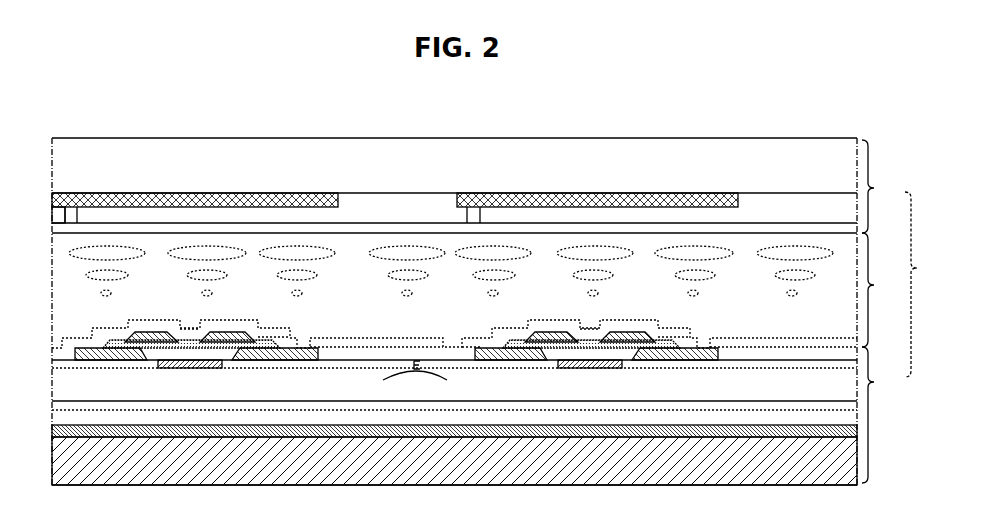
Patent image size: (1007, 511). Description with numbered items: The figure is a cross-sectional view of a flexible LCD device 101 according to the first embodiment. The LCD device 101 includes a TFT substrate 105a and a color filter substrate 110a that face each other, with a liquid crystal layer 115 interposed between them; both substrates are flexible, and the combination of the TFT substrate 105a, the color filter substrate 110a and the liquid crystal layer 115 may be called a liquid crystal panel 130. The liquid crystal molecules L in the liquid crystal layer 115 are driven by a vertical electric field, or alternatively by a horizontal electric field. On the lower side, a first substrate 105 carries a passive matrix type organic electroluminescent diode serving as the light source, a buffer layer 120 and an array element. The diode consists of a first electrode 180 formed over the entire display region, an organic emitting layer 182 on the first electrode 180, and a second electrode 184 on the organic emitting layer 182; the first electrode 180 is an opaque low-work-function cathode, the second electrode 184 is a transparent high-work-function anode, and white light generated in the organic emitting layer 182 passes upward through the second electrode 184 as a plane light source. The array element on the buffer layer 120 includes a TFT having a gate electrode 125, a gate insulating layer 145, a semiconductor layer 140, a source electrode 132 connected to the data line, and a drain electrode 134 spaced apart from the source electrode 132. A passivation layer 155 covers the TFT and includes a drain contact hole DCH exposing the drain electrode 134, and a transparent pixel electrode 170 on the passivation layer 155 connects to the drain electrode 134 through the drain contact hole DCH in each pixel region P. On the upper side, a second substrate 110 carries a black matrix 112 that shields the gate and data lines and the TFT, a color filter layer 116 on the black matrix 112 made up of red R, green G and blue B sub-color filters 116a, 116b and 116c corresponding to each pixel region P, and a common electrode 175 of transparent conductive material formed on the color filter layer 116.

The LCD device 101 is at (815, 111).
The first substrate 105 is at (843, 461).
The TFT substrate 105a is at (884, 415).
The second substrate 110 is at (853, 161).
The color filter substrate 110a is at (884, 186).
The black matrix 112 is at (283, 193).
The liquid crystal layer 115 is at (484, 290).
The color filter layer 116 is at (404, 104).
The red sub-color filter 116a is at (150, 215).
The green sub-color filter 116b is at (427, 207).
The blue sub-color filter 116c is at (760, 205).
The buffer layer 120 is at (465, 387).
The gate electrode 125 is at (185, 368).
The liquid crystal panel 130 is at (924, 284).
The source electrode 132 is at (150, 332).
The drain electrode 134 is at (225, 332).
The semiconductor layer 140 is at (190, 340).
The gate insulating layer 145 is at (380, 360).
The passivation layer 155 is at (355, 350).
The pixel electrode 170 is at (335, 338).
The common electrode 175 is at (360, 233).
The first electrode 180 is at (396, 410).
The organic emitting layer 182 is at (414, 410).
The second electrode 184 is at (436, 404).
The red R is at (58, 215).
The green G is at (387, 213).
The blue B is at (791, 213).
The liquid crystal molecules L is at (715, 275).
The drain contact hole DCH is at (303, 348).
The pixel region P is at (842, 468).